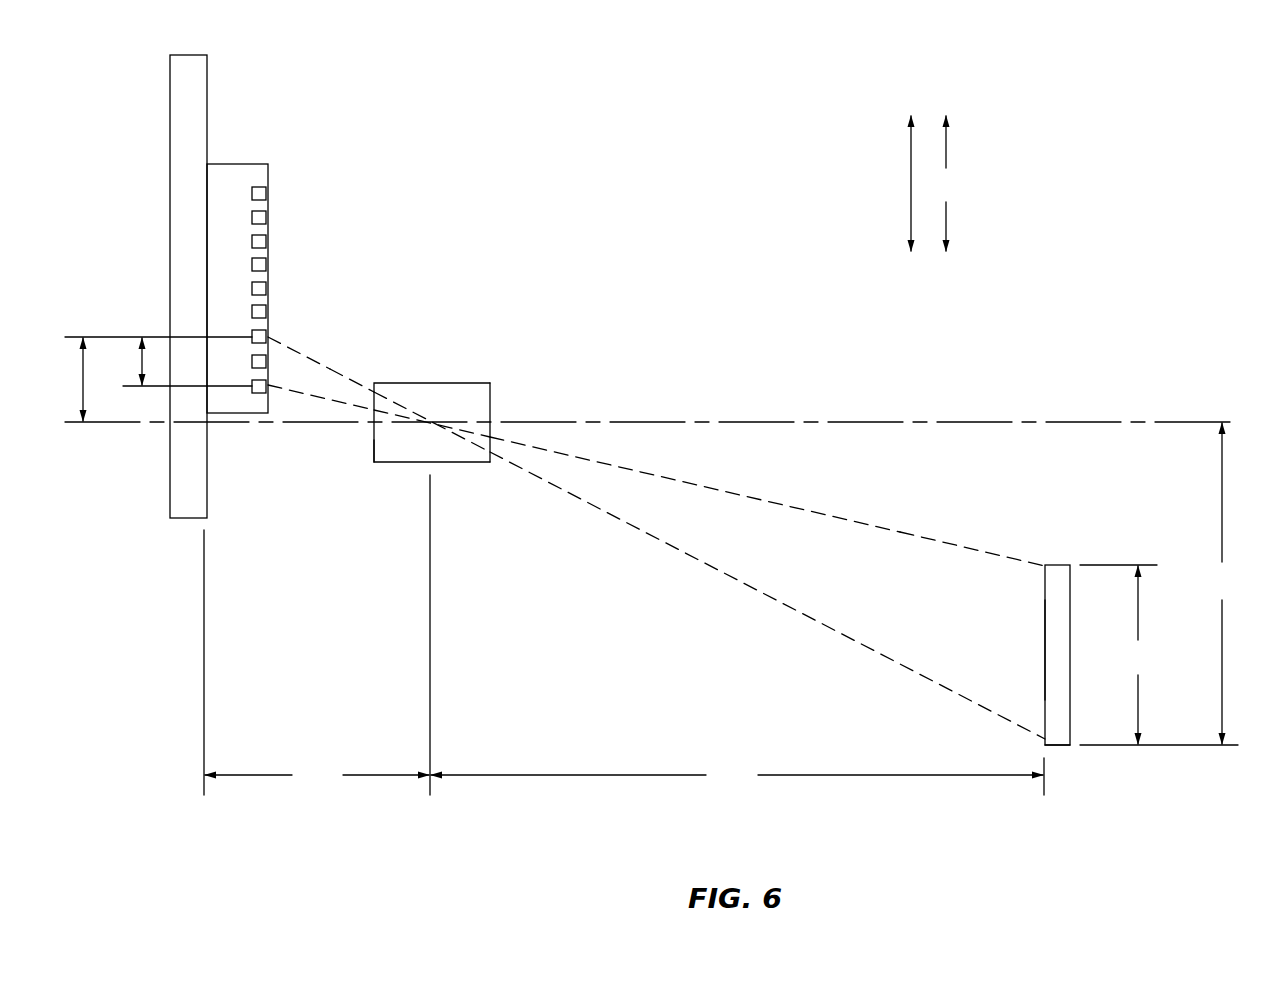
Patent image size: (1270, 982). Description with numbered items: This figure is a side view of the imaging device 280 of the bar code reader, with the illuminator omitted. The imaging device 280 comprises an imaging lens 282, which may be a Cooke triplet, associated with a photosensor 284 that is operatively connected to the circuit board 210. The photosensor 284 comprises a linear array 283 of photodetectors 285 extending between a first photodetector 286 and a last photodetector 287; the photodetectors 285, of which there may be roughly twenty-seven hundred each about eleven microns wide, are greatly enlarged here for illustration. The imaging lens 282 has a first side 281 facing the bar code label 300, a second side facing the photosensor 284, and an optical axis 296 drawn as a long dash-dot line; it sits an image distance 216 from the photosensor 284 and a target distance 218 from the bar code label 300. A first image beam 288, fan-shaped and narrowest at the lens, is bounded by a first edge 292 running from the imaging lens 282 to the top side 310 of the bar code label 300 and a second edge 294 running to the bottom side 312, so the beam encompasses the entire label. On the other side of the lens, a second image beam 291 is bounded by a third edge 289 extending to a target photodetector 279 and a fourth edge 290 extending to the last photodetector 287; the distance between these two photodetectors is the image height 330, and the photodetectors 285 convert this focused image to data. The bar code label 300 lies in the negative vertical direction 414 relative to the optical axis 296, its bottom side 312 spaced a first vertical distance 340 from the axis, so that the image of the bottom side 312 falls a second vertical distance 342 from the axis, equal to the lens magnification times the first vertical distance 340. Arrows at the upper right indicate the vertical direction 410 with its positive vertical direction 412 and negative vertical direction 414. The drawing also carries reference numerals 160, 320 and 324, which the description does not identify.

The imaging apparatus 160 is at (144, 325).
The circuit board 210 is at (170, 123).
The photosensor 284 is at (240, 163).
The linear array 283 is at (374, 450).
The photodetectors 285 is at (263, 172).
The first photodetector 286 is at (252, 193).
The target photodetector 279 is at (252, 337).
The last photodetector 287 is at (266, 395).
The image height 330 is at (142, 360).
The second vertical distance 342 is at (83, 382).
The optical axis 296 is at (996, 422).
The second image beam 291 is at (302, 345).
The third edge 289 is at (347, 376).
The fourth edge 290 is at (318, 398).
The imaging device 280 is at (455, 386).
The imaging lens 282 is at (476, 356).
The first side 281 is at (491, 402).
The second edge 294 is at (663, 545).
The first edge 292 is at (830, 514).
The first image beam 288 is at (930, 536).
The bar code label 300 is at (1025, 651).
The top side 310 is at (1057, 565).
The detector surface 324 is at (1045, 652).
The bottom side 312 is at (1057, 745).
The detector height 320 is at (1159, 655).
The first vertical distance 340 is at (1223, 583).
The image distance 216 is at (317, 635).
The target distance 218 is at (737, 776).
The vertical direction 410 is at (911, 182).
The positive vertical direction 412 is at (946, 155).
The negative vertical direction 414 is at (946, 210).